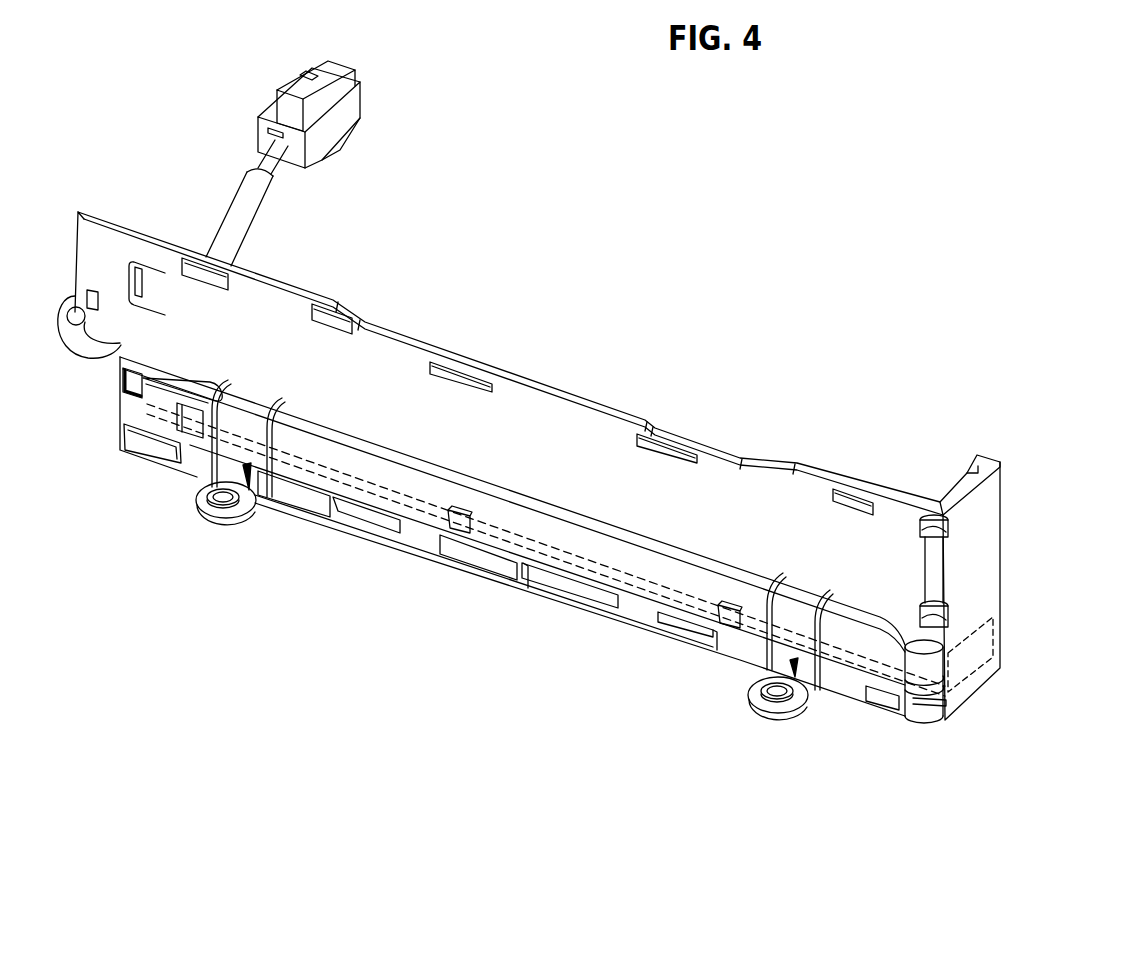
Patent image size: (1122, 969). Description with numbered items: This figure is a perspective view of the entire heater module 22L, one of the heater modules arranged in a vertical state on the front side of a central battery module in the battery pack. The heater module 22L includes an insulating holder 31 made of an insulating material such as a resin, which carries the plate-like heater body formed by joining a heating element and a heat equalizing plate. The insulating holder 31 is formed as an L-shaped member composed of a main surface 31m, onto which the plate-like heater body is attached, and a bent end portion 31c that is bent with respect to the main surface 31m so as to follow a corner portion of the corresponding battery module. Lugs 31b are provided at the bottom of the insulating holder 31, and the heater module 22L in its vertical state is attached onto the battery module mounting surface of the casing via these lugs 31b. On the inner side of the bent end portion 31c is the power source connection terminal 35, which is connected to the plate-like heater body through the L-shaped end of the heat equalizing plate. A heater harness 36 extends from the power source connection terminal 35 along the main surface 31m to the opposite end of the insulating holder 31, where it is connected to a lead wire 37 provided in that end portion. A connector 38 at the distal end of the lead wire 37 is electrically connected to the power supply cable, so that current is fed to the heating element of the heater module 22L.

The heater module 22L is at (889, 401).
The insulating holder 31 is at (733, 446).
The lugs 31b is at (233, 527).
The bent end portion 31c is at (973, 557).
The main surface 31m is at (560, 440).
The power source connection terminal 35 is at (1000, 640).
The heater harness 36 is at (497, 530).
The lead wire 37 is at (270, 197).
The connector 38 is at (360, 98).